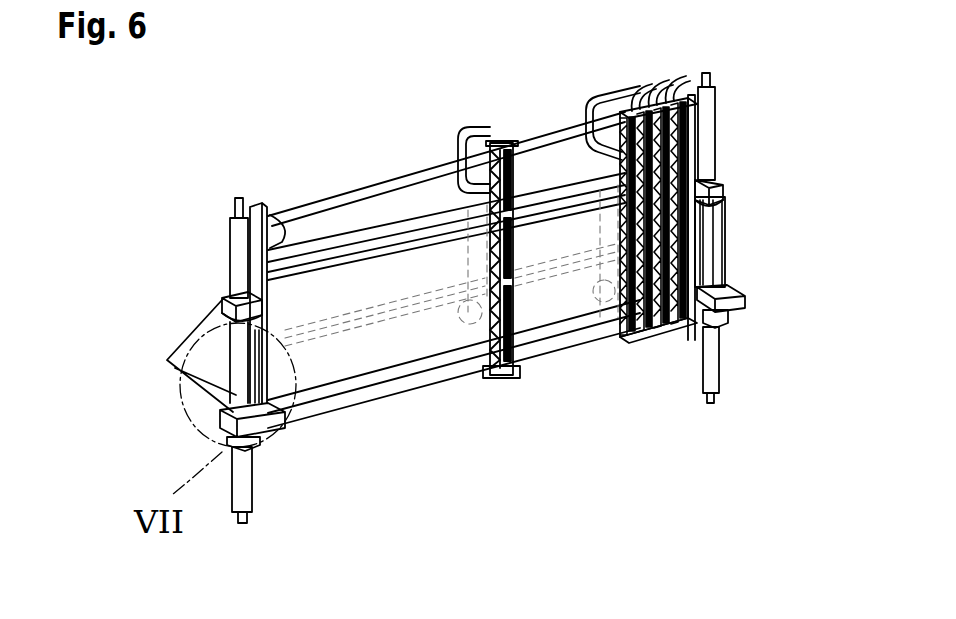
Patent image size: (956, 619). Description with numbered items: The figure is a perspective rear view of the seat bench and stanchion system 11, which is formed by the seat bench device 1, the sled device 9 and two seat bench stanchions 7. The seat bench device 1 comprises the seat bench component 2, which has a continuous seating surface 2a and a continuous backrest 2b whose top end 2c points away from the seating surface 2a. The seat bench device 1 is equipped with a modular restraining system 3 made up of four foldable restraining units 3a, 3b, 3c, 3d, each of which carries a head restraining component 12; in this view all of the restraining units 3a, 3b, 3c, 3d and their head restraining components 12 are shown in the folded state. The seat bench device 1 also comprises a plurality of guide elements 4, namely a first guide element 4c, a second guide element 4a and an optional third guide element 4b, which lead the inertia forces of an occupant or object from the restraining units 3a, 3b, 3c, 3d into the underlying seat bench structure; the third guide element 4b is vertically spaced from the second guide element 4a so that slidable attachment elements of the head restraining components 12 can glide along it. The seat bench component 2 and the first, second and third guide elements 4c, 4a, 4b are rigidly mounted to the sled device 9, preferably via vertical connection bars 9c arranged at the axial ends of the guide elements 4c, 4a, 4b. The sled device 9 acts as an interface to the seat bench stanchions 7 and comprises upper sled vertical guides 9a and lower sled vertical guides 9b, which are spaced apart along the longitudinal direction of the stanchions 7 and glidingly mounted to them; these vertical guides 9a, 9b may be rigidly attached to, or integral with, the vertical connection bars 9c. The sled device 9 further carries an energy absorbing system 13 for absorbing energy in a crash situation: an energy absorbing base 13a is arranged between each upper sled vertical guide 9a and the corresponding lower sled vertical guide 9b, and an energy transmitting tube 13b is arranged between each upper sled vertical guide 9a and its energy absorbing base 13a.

The seat bench device 1 is at (328, 136).
The seat bench component 2 is at (483, 392).
The seating surface 2a is at (176, 360).
The backrest 2b is at (431, 325).
The top end 2c is at (328, 236).
The modular restraining system 3 is at (676, 90).
The restraining unit 3a is at (641, 78).
The restraining unit 3b is at (613, 88).
The restraining unit 3c is at (584, 90).
The restraining unit 3d is at (457, 120).
The guide elements 4 is at (541, 120).
The second guide element 4a is at (392, 230).
The third guide element 4b is at (414, 173).
The first guide element 4c is at (571, 342).
The seat bench stanchions 7 is at (241, 230).
The sled device 9 is at (216, 296).
The upper sled vertical guides 9a is at (230, 312).
The lower sled vertical guides 9b is at (218, 442).
The vertical connection bars 9c is at (263, 208).
The seat bench and stanchion system 11 is at (182, 145).
The head restraining component 12 is at (662, 80).
The energy absorbing system 13 is at (276, 368).
The energy absorbing base 13a is at (280, 433).
The energy transmitting tube 13b is at (262, 392).